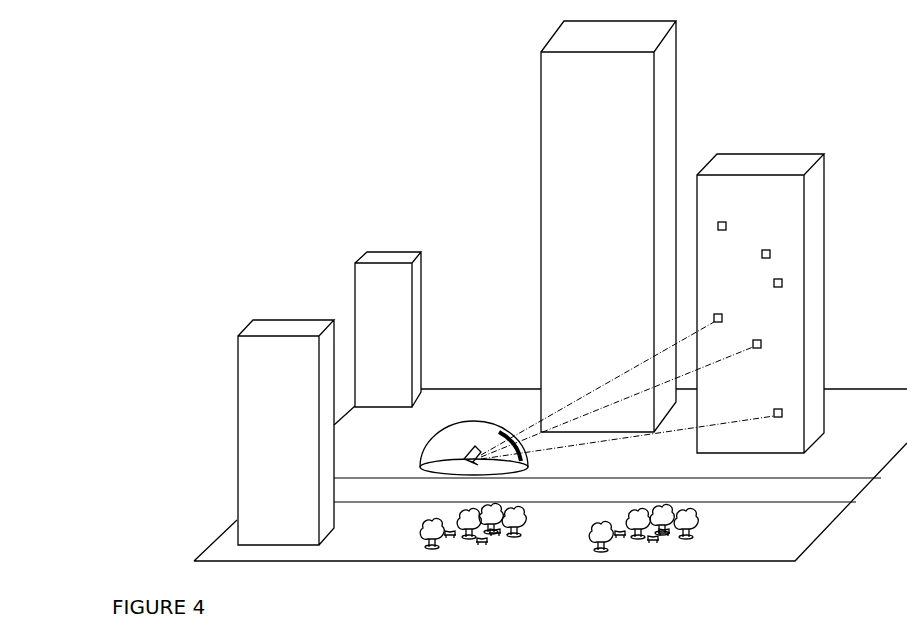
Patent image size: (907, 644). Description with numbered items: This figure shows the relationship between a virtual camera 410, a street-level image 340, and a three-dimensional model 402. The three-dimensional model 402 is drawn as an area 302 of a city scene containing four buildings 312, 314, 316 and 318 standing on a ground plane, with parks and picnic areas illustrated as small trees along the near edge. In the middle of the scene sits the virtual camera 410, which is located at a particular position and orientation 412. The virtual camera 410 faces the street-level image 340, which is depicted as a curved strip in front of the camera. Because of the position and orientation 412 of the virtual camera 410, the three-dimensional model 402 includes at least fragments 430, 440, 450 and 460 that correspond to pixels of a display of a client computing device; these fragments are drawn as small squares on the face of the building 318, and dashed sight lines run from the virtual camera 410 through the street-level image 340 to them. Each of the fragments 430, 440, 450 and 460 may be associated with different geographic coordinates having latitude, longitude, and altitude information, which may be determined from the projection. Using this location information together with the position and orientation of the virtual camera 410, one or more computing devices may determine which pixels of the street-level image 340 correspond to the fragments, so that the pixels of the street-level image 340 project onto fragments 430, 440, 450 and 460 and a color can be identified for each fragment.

The area 302 is at (162, 585).
The building 312 is at (286, 425).
The building 314 is at (355, 272).
The building 316 is at (541, 80).
The building 318 is at (824, 178).
The street-level image 340 is at (499, 445).
The 3D model 402 is at (262, 80).
The virtual camera 410 is at (466, 461).
The position and orientation 412 is at (466, 454).
The fragment 430 is at (722, 310).
The fragment 440 is at (765, 280).
The fragment 450 is at (760, 336).
The fragment 460 is at (779, 405).